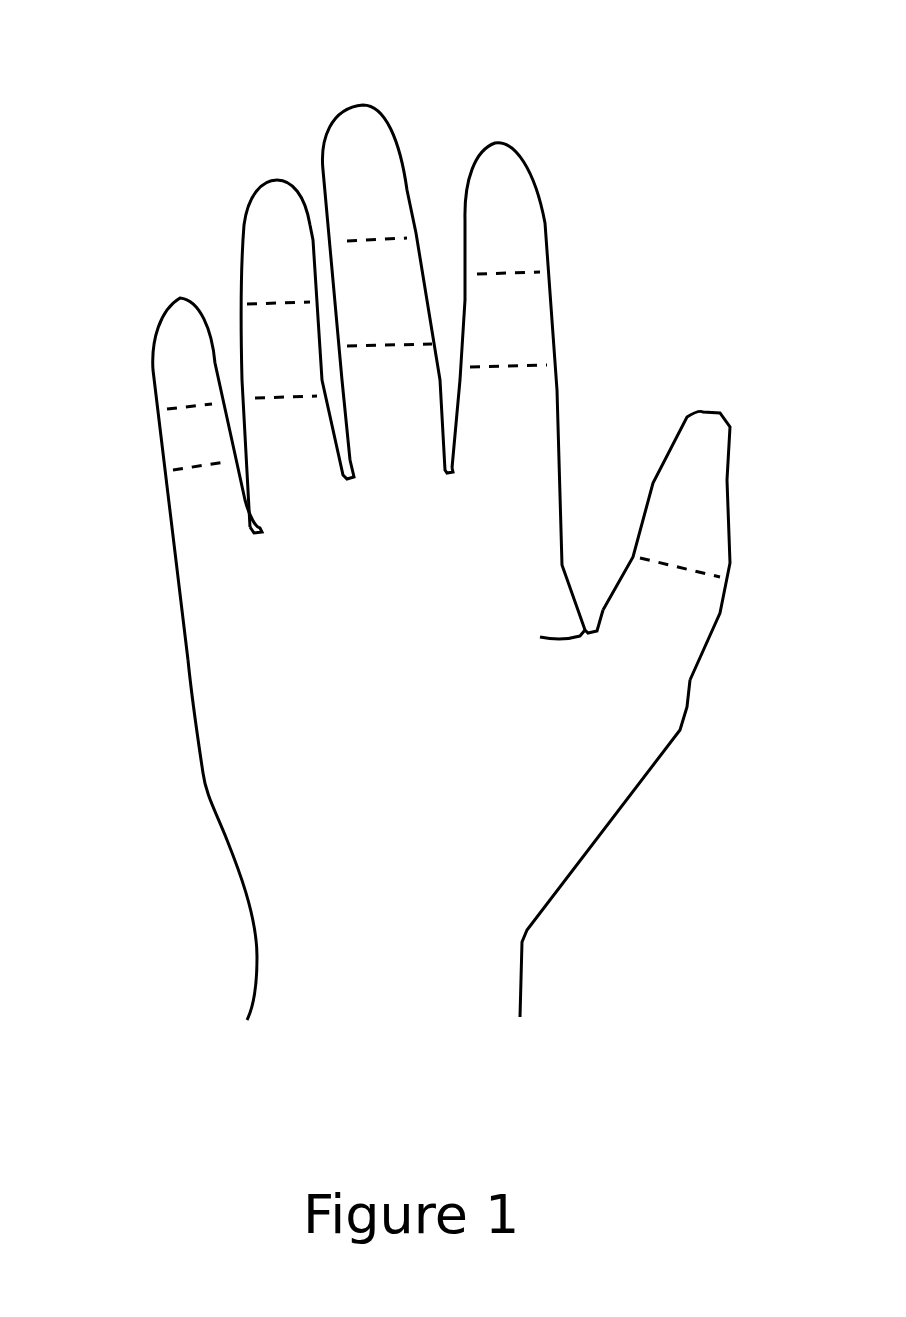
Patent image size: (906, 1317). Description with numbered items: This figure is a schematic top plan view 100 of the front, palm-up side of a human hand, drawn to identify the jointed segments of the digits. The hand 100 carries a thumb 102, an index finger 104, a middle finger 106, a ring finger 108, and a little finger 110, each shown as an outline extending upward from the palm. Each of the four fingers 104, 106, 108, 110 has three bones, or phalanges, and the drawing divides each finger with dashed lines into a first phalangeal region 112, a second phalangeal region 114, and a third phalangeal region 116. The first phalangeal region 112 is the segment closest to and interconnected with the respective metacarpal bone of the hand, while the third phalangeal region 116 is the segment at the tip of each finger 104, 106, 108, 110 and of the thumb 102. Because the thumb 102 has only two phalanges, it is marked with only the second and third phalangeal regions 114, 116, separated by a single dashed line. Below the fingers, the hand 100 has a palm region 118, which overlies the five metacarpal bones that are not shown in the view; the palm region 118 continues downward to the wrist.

The top plan schematic view of human hand 100 is at (724, 118).
The thumb 102 is at (702, 607).
The index finger 104 is at (540, 298).
The middle finger 106 is at (415, 235).
The ring finger 108 is at (255, 213).
The little finger 110 is at (160, 342).
The first phalangeal region 112 is at (233, 515).
The second phalangeal region 114 is at (217, 449).
The third phalangeal region 116 is at (208, 388).
The palm region 118 is at (438, 740).